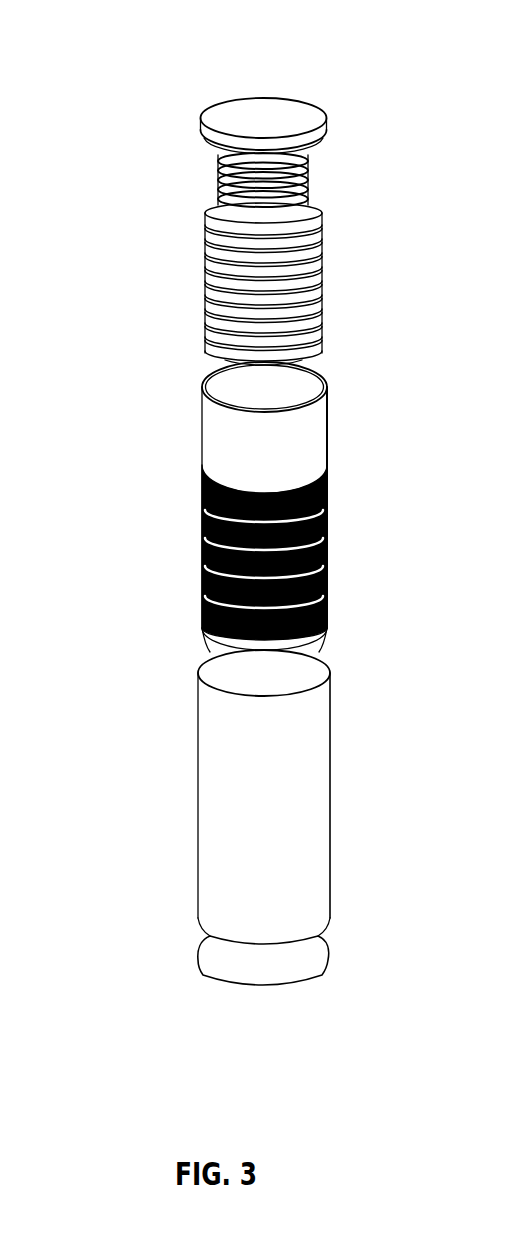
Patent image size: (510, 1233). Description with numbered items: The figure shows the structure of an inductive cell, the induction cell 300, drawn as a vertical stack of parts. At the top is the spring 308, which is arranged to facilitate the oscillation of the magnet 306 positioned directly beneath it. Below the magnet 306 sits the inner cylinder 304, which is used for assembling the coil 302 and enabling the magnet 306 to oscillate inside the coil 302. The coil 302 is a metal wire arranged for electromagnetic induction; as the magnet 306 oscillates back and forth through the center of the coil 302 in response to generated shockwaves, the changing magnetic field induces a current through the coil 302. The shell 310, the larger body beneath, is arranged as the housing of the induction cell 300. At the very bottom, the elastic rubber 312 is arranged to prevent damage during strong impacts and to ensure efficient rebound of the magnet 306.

The induction cell 300 is at (245, 36).
The coil 302 is at (192, 546).
The inner cylinder 304 is at (192, 428).
The magnet 306 is at (192, 241).
The spring 308 is at (192, 173).
The shell 310 is at (192, 780).
The elastic rubber 312 is at (192, 945).